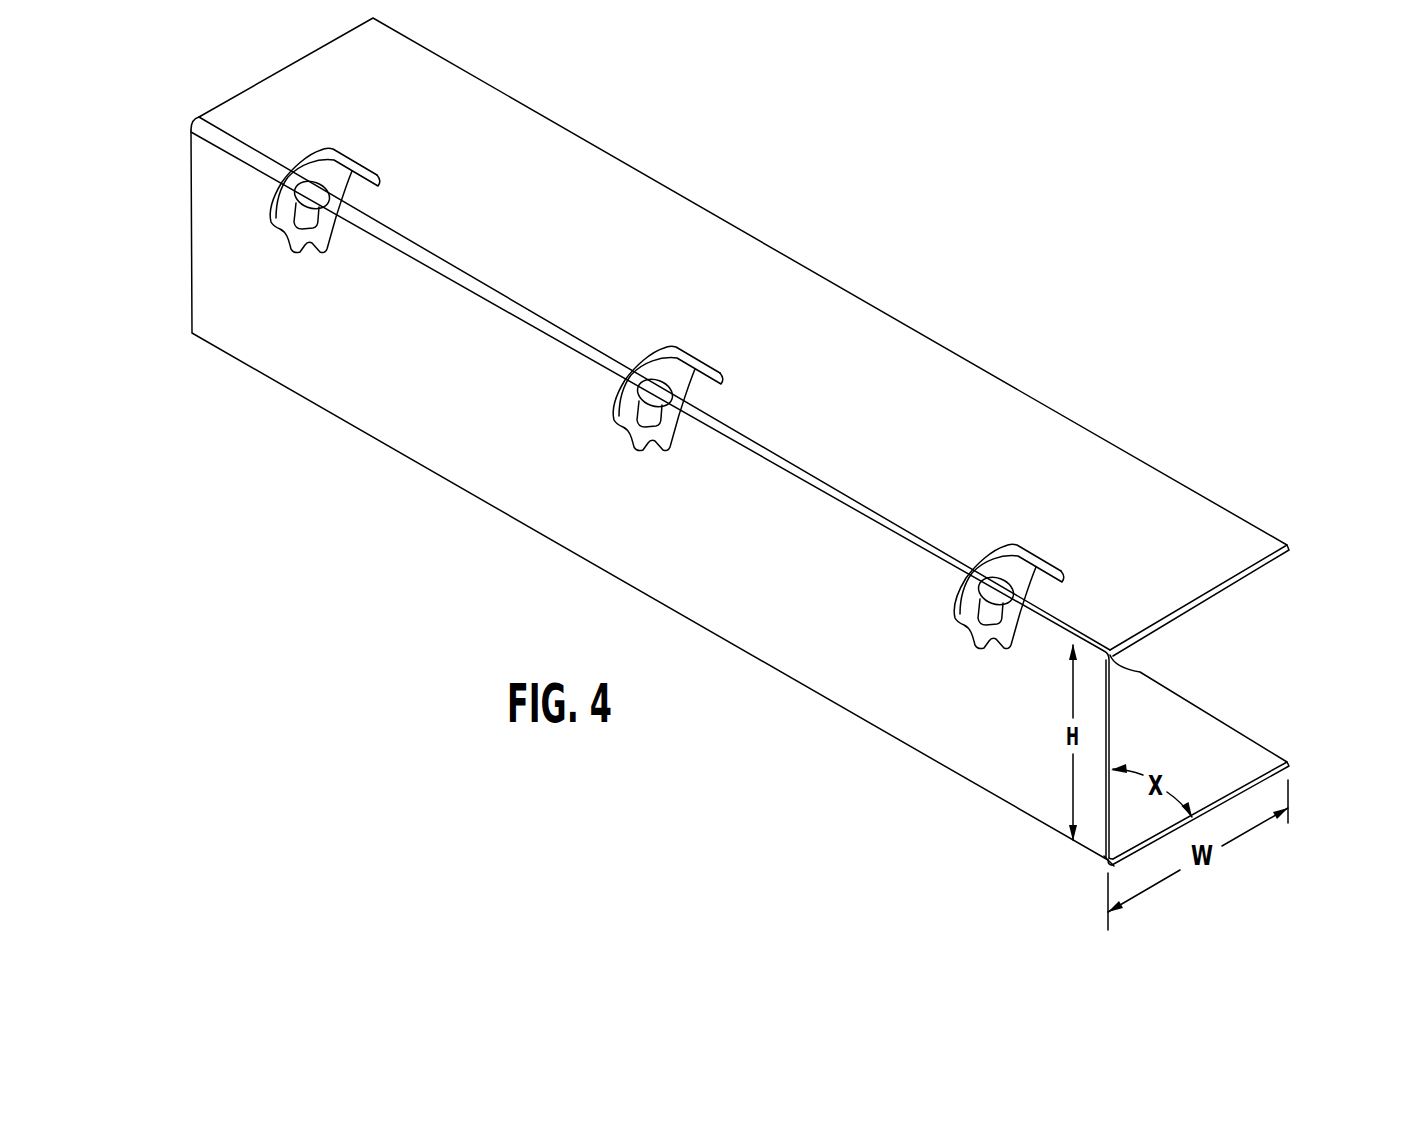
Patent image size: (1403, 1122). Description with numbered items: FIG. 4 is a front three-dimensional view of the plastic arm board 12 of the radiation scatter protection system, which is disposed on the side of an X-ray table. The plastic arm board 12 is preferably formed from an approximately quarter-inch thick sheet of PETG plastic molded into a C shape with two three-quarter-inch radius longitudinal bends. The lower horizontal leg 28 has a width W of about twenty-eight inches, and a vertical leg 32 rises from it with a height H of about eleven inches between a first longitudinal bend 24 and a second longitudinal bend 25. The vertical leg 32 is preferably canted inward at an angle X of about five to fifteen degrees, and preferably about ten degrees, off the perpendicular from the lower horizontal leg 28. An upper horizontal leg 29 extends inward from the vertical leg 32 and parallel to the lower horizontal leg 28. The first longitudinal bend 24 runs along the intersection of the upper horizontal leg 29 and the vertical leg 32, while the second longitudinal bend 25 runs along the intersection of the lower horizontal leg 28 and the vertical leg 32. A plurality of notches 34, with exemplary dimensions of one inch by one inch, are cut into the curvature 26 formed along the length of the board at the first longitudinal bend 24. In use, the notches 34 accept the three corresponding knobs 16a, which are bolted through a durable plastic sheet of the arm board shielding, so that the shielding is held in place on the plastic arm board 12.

The plastic arm board 12 is at (818, 676).
The knobs 16a is at (320, 194).
The first longitudinal bend 24 is at (1108, 864).
The second longitudinal bend 25 is at (1133, 673).
The curvature 26 is at (500, 287).
The lower horizontal leg 28 is at (1251, 781).
The upper horizontal leg 29 is at (1245, 576).
The vertical leg 32 is at (1107, 815).
The notches 34 is at (364, 174).